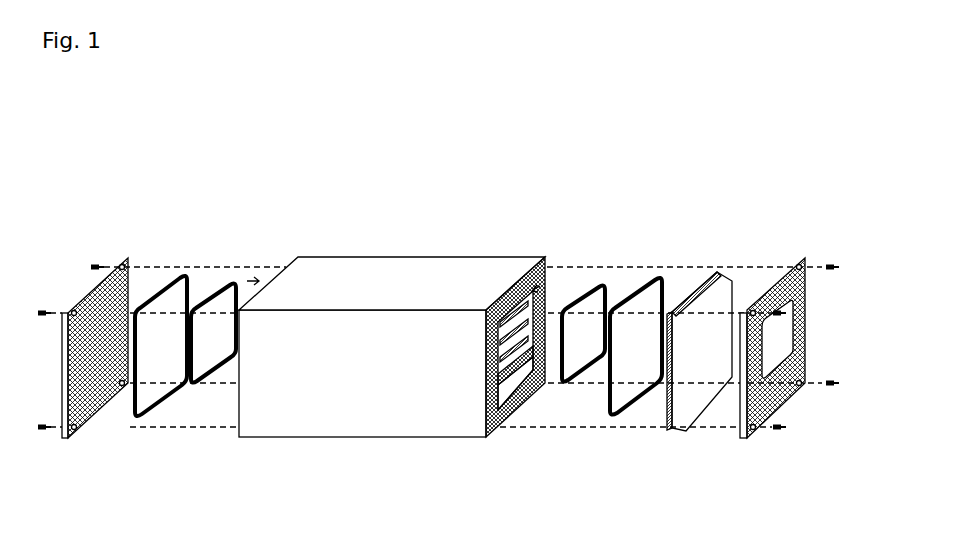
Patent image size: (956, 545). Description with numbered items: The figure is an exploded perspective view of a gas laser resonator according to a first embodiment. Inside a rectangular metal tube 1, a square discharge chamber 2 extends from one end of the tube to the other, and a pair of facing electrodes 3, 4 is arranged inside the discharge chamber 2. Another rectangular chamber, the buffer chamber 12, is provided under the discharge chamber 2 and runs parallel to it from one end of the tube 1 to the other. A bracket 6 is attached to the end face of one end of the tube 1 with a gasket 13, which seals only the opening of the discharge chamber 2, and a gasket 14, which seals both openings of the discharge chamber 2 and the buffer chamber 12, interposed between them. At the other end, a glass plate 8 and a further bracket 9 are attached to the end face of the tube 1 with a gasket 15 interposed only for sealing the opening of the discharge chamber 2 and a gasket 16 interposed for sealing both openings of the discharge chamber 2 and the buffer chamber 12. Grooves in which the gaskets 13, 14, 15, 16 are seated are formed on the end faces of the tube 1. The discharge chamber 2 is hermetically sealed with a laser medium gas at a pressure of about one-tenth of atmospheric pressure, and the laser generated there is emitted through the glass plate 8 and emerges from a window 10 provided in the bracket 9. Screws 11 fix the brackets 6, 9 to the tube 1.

The rectangular metal tube 1 is at (354, 273).
The discharge chamber 2 is at (507, 364).
The electrode 3 is at (502, 346).
The electrode 4 is at (513, 343).
The bracket 6 is at (93, 293).
The glass plate 8 is at (710, 275).
The bracket 9 is at (745, 338).
The window 10 is at (775, 347).
The screws 11 is at (44, 433).
The buffer chamber 12 is at (508, 395).
The gasket 13 is at (223, 283).
The gasket 14 is at (173, 277).
The gasket 15 is at (593, 280).
The gasket 16 is at (657, 273).